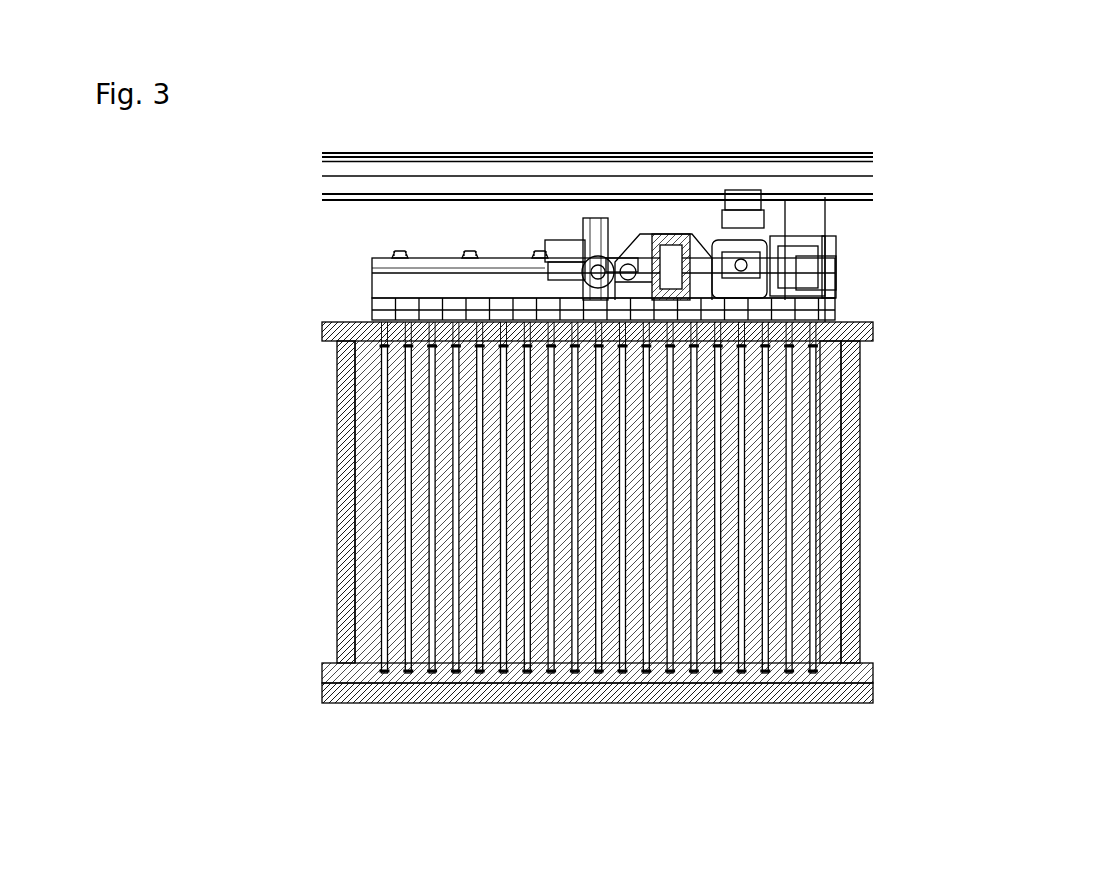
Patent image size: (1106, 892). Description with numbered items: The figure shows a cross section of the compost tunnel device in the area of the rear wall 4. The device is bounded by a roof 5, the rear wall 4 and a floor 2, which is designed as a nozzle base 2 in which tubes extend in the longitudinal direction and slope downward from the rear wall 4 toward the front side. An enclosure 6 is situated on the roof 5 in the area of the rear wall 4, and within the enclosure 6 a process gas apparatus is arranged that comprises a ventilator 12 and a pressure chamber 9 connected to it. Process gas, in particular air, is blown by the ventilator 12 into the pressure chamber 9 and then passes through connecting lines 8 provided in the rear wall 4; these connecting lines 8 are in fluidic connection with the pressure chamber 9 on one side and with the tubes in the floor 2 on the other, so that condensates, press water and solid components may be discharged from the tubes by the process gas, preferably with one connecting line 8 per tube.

The floor 2 is at (660, 705).
The rear wall 4 is at (838, 638).
The roof 5 is at (838, 329).
The enclosure 6 is at (641, 161).
The connecting lines 8 is at (750, 475).
The pressure chamber 9 is at (450, 273).
The ventilator 12 is at (656, 218).